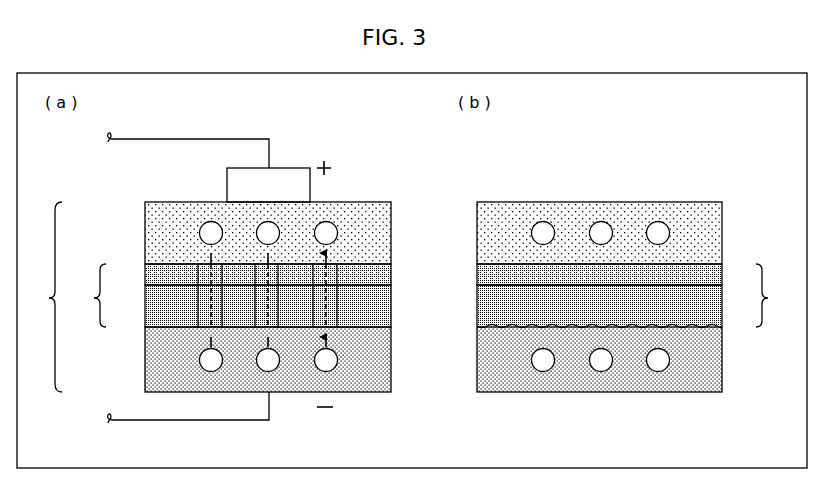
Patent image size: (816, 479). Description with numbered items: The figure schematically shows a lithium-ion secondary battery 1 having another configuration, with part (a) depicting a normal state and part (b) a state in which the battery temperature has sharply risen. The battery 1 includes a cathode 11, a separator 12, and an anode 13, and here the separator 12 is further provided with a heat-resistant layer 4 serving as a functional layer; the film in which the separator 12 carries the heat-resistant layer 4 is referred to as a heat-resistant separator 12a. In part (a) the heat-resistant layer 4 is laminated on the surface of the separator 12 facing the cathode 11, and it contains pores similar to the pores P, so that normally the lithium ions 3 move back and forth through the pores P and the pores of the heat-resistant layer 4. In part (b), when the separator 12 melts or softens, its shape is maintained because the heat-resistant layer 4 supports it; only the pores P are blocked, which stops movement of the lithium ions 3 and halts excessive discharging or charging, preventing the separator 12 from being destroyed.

The lithium-ion secondary battery 1 is at (49, 297).
The cathode 11 is at (146, 232).
The heat-resistant separator 12a is at (432, 295).
The heat-resistant layer 4 is at (146, 274).
The separator 12 is at (146, 310).
The anode 13 is at (146, 359).
The lithium ions 3 is at (207, 225).
The pores P is at (330, 304).